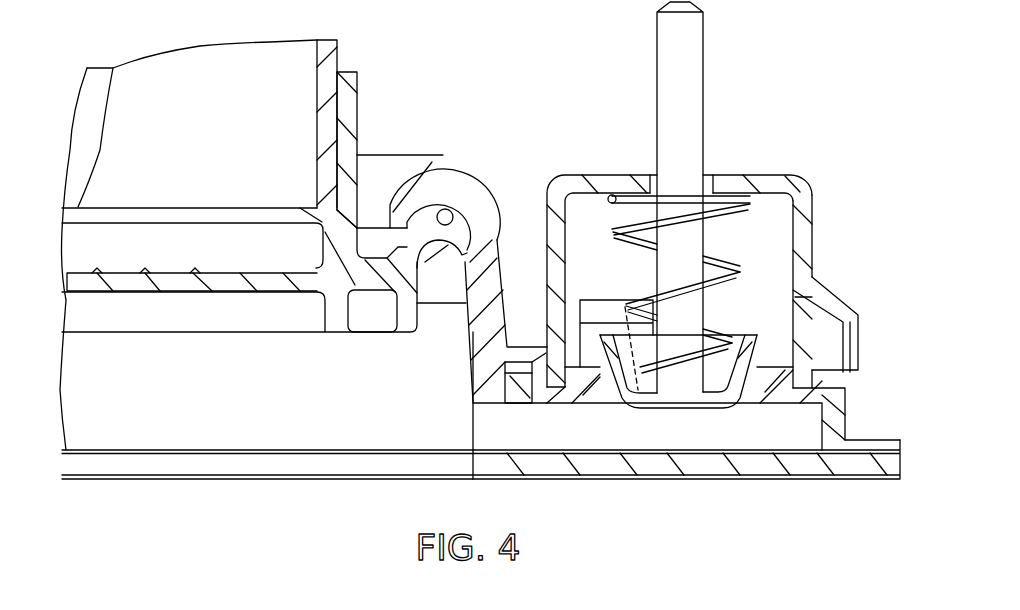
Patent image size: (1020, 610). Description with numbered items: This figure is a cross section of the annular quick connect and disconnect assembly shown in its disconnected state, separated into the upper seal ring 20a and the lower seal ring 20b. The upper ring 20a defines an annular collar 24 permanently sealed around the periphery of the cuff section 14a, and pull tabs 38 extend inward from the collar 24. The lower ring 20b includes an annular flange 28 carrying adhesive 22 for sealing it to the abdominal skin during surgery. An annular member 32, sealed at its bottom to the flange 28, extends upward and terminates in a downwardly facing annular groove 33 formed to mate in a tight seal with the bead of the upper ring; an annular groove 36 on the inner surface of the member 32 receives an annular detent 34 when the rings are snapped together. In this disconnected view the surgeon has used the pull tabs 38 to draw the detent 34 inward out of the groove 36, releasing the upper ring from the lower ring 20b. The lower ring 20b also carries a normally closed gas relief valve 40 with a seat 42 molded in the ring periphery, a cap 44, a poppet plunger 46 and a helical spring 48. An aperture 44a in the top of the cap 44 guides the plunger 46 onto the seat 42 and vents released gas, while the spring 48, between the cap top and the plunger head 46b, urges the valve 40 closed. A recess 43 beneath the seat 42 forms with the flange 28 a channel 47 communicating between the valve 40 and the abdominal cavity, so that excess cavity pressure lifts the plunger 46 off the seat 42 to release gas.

The cuff section 14a is at (278, 57).
The annular collar 24 is at (350, 122).
The upper seal ring 20a is at (284, 335).
The lower seal ring 20b is at (458, 153).
The annular groove 33 is at (450, 210).
The annular groove 36 is at (499, 277).
The annular detent 34 is at (458, 300).
The annular member 32 is at (482, 373).
The pull tabs 38 is at (145, 285).
The annular flange 28 is at (278, 462).
The adhesive 22 is at (323, 479).
The seat 42 is at (583, 387).
The channel 47 is at (585, 387).
The recess 43 is at (767, 403).
The gas relief valve 40 is at (760, 173).
The cap 44 is at (808, 232).
The aperture 44a is at (650, 180).
The poppet valve plunger 46 is at (705, 72).
The head of plunger 46b is at (760, 343).
The helical spring 48 is at (587, 197).